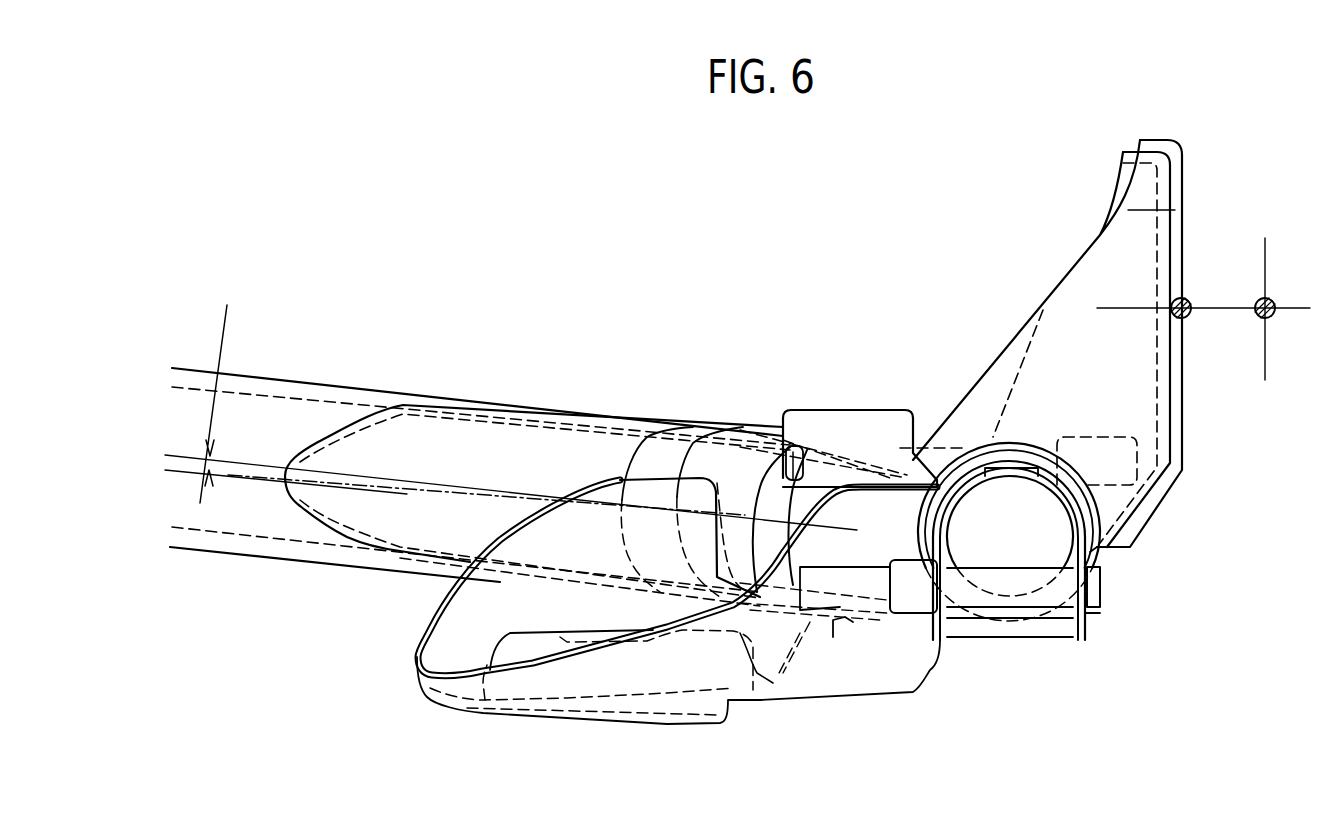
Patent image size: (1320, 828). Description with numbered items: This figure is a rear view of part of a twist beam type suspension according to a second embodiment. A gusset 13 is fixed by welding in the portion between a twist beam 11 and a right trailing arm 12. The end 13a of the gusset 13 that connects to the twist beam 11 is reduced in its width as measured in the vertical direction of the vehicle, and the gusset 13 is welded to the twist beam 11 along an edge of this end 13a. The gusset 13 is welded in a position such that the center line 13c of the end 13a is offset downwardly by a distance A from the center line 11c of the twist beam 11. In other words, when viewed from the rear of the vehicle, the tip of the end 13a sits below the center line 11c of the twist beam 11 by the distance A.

The twist beam 11 is at (337, 387).
The center line of the twist beam 11c is at (240, 457).
The right trailing arm 12 is at (1097, 553).
The gusset 13 is at (463, 405).
The end of the gusset 13a is at (298, 531).
The center line of the end 13c is at (240, 457).
The distance A is at (211, 404).